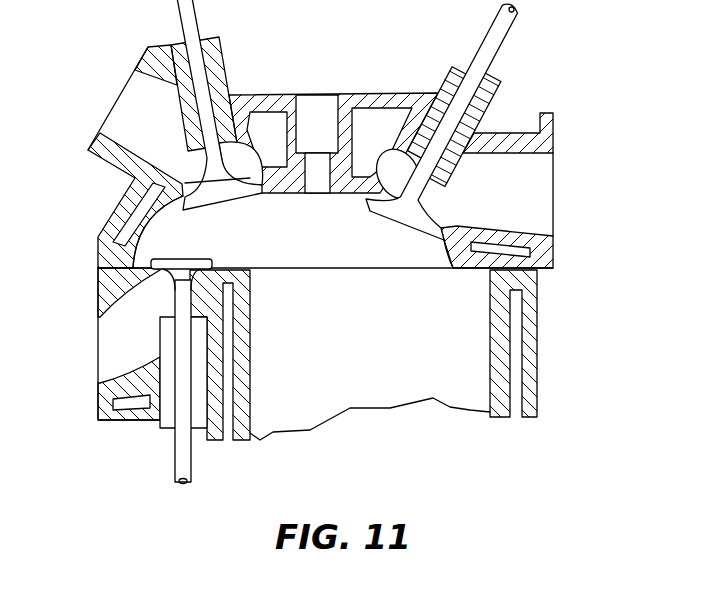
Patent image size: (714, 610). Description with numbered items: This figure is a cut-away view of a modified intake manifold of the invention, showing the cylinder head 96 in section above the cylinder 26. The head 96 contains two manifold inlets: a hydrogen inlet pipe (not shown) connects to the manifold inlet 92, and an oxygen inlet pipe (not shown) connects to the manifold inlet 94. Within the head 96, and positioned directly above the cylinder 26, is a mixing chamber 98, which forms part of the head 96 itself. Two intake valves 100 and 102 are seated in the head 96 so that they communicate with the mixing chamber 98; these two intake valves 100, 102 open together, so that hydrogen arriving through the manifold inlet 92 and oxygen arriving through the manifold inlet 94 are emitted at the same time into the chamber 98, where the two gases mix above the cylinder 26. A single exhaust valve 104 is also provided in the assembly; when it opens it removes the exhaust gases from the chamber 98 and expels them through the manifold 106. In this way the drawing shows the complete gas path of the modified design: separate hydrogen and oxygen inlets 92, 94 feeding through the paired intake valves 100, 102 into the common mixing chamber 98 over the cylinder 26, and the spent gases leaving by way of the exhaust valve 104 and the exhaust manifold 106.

The cylinder 26 is at (363, 355).
The manifold inlet 92 is at (540, 192).
The manifold inlet 94 is at (125, 113).
The head 96 is at (364, 93).
The mixing chamber 98 is at (307, 251).
The intake valve 100 is at (494, 63).
The intake valve 102 is at (197, 22).
The exhaust valve 104 is at (178, 456).
The manifold 106 is at (107, 351).